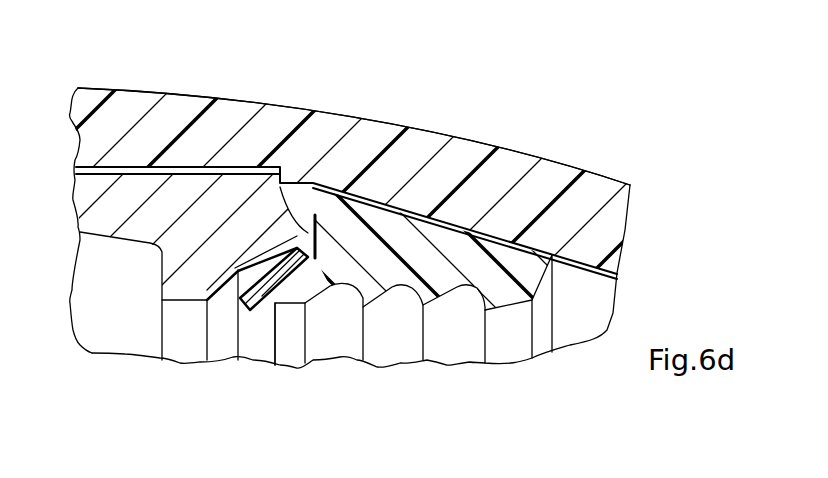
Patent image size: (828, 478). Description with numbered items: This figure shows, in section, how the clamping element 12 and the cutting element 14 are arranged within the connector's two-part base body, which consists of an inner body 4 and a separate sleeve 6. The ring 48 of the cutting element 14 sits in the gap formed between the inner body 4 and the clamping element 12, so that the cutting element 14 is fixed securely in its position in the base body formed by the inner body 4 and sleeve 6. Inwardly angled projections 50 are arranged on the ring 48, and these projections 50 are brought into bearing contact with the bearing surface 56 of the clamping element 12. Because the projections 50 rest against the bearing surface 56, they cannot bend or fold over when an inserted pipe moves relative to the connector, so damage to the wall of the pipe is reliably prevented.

The inner body 4 is at (107, 212).
The sleeve 6 is at (352, 150).
The clamping element 12 is at (410, 250).
The cutting element 14 is at (257, 318).
The ring 48 is at (275, 268).
The projections 50 is at (262, 292).
The bearing surface 56 is at (310, 300).